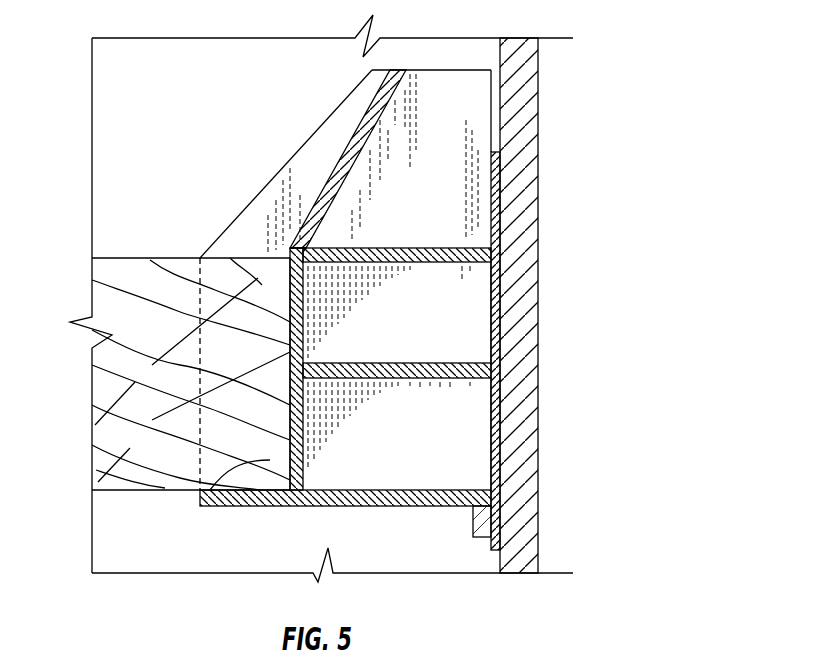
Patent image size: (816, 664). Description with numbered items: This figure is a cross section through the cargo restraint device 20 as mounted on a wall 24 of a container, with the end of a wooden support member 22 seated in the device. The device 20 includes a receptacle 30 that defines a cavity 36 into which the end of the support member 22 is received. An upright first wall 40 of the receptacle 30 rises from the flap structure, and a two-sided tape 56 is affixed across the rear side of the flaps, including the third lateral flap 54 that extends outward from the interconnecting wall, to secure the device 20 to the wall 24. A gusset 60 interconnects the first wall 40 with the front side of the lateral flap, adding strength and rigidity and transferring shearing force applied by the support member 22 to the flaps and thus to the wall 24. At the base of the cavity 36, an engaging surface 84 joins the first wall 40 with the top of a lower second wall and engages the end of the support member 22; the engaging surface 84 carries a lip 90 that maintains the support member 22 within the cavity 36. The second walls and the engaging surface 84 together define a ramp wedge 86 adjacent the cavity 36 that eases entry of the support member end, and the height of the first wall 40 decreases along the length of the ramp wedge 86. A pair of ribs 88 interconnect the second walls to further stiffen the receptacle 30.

The cargo restraint device 20 is at (445, 67).
The support member 22 is at (110, 257).
The wall 24 is at (527, 120).
The receptacle 30 is at (465, 322).
The cavity 36 is at (216, 503).
The first wall 40 is at (282, 187).
The third lateral flap 54 is at (473, 521).
The two-sided tape 56 is at (498, 205).
The gusset 60 is at (468, 490).
The engaging surface 84 is at (287, 282).
The ramp wedge 86 is at (366, 114).
The rib 88 is at (397, 249).
The lip 90 is at (306, 246).